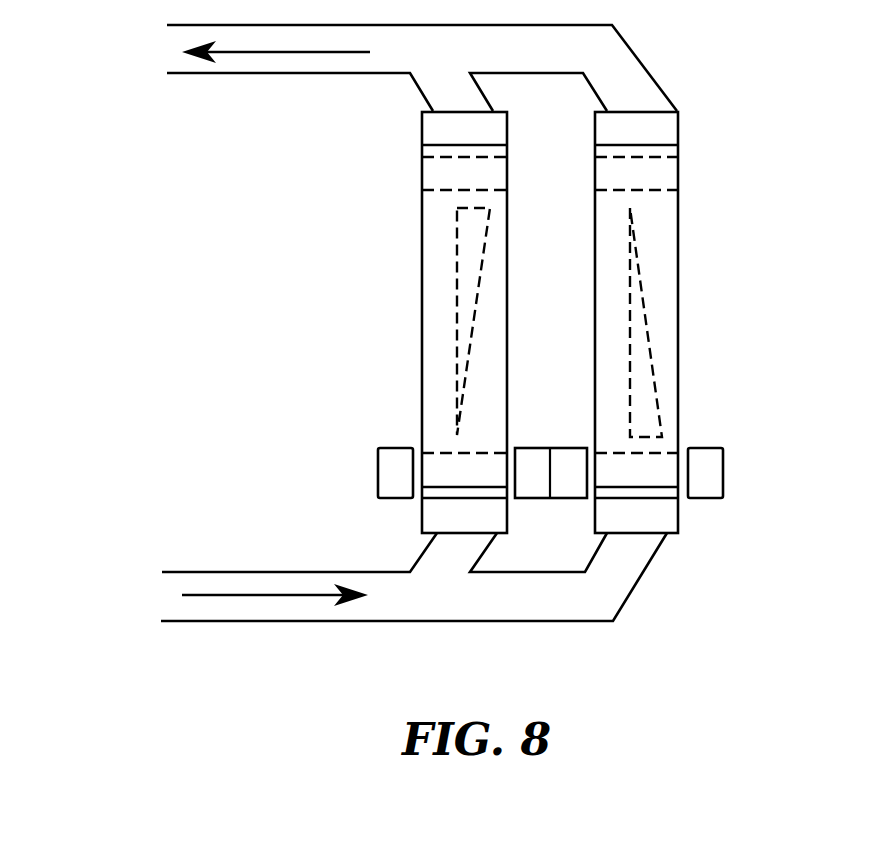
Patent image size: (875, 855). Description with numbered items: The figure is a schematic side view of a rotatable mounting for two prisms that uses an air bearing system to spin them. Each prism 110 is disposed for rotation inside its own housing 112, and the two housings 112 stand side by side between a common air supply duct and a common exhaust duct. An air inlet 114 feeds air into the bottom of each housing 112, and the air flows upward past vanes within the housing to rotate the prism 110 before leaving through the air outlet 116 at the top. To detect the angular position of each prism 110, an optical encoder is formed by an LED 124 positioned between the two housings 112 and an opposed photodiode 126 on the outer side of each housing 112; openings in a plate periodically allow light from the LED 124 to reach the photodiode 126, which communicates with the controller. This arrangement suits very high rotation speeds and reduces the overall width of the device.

The prism 110 is at (455, 248).
The housing 112 is at (422, 125).
The air inlet 114 is at (243, 572).
The air outlet 116 is at (243, 73).
The LED 124 is at (570, 448).
The photodiode 126 is at (748, 426).